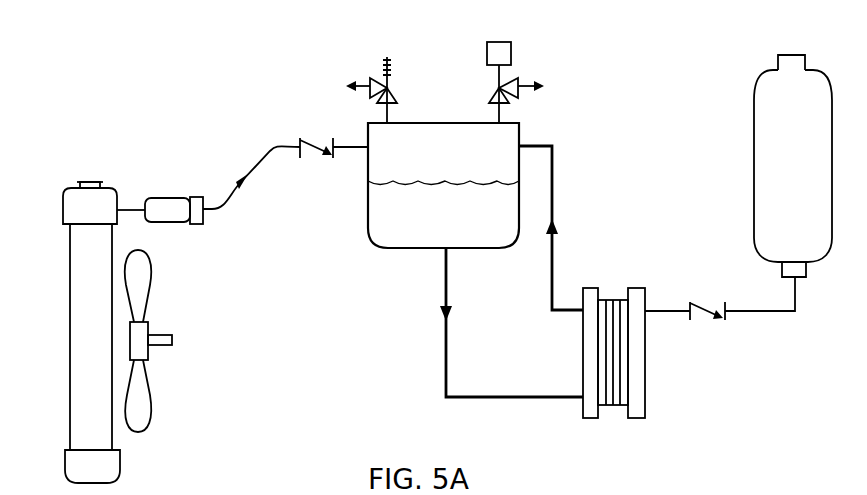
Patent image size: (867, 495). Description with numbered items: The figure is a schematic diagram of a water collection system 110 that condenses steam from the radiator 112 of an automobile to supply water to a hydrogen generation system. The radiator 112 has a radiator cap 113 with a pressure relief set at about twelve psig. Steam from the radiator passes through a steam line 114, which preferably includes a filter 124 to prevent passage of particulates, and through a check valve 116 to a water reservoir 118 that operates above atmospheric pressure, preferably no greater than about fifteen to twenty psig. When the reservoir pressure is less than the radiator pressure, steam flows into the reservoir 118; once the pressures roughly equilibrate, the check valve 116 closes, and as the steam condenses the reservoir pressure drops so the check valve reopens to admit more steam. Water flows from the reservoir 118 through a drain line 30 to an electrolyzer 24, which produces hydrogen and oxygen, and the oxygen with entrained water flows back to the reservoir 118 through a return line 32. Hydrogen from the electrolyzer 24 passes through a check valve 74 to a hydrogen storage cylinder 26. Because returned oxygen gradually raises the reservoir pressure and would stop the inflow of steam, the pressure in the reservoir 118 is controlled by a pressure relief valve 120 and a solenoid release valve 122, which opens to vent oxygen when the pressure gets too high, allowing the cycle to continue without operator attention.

The water collection system 110 is at (181, 104).
The radiator 112 is at (120, 472).
The radiator cap 113 is at (90, 180).
The steam line 114 is at (232, 186).
The check valve 116 is at (300, 140).
The water reservoir 118 is at (368, 215).
The pressure relief valve 120 is at (375, 80).
The solenoid release valve 122 is at (512, 80).
The filter 124 is at (177, 224).
The return line 32 is at (555, 183).
The drain line 30 is at (445, 350).
The electrolyzer 24 is at (583, 368).
The check valve 74 is at (715, 300).
The hydrogen storage cylinder 26 is at (806, 172).